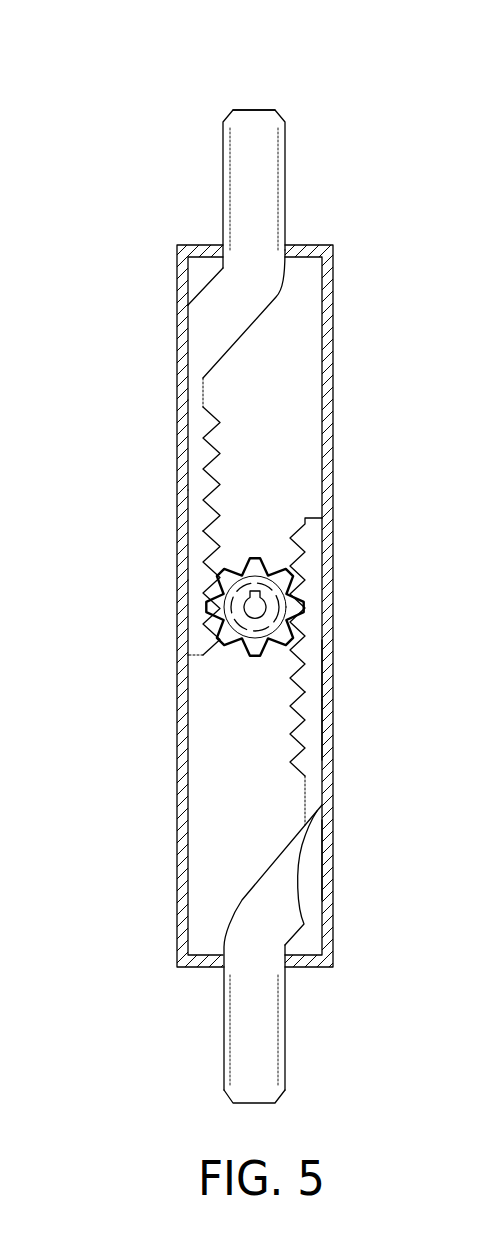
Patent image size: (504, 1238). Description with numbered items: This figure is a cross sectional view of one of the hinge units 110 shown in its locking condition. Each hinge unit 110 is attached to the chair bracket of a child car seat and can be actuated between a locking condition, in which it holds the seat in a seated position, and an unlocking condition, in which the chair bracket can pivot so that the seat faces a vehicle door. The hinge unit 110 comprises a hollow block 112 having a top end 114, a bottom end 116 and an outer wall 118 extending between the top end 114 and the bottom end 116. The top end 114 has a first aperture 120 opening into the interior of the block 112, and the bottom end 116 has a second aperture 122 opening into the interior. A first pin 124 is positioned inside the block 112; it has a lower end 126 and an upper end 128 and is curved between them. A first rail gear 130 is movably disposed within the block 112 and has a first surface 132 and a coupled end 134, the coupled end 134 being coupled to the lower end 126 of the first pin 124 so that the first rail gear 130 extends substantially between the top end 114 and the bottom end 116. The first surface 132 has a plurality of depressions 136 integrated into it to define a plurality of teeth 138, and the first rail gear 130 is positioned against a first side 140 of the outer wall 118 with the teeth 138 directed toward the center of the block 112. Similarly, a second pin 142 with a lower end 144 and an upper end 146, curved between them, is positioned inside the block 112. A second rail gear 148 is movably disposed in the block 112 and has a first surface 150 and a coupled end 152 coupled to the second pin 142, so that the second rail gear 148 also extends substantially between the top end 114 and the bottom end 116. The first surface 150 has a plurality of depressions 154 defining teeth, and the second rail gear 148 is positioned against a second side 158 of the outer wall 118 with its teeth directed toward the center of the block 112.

The hinge unit 110 is at (145, 284).
The block 112 is at (333, 246).
The top end 114 is at (311, 247).
The bottom end 116 is at (200, 967).
The outer wall 118 is at (177, 632).
The first aperture 120 is at (252, 265).
The second aperture 122 is at (258, 990).
The first pin 124 is at (278, 296).
The lower end 126 is at (177, 345).
The upper end 128 is at (256, 110).
The first rail gear 130 is at (177, 440).
The first surface 132 is at (205, 396).
The coupled end 134 is at (203, 393).
The depressions 136 is at (240, 467).
The teeth 138 is at (222, 478).
The first side 140 is at (177, 525).
The second pin 142 is at (243, 897).
The lower end 144 is at (253, 1103).
The upper end 146 is at (322, 856).
The second rail gear 148 is at (327, 671).
The first surface 150 is at (305, 803).
The coupled end 152 is at (275, 718).
The depressions 154 is at (290, 675).
The second side 158 is at (326, 712).